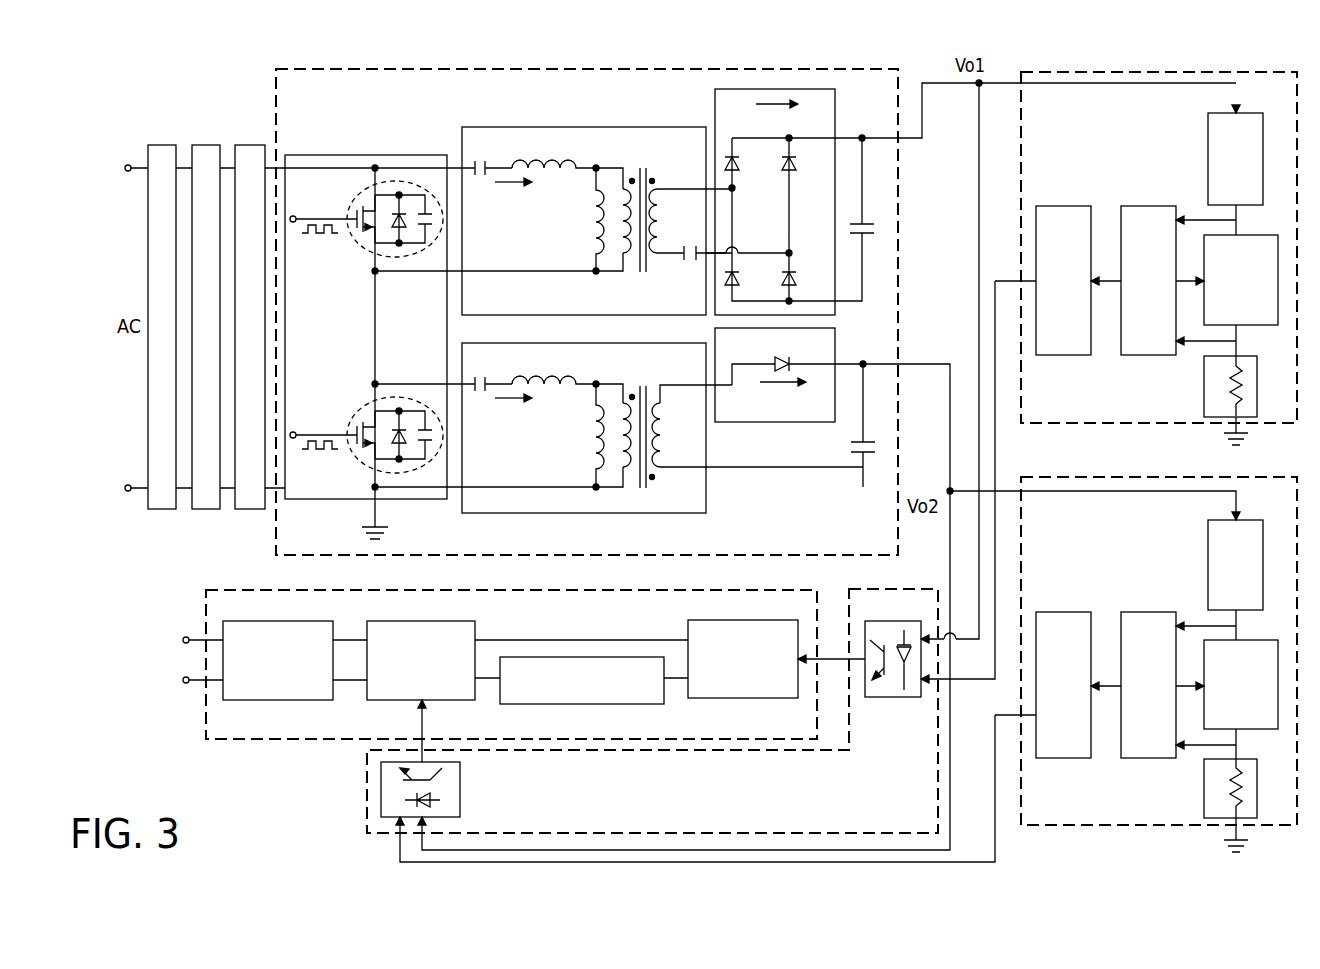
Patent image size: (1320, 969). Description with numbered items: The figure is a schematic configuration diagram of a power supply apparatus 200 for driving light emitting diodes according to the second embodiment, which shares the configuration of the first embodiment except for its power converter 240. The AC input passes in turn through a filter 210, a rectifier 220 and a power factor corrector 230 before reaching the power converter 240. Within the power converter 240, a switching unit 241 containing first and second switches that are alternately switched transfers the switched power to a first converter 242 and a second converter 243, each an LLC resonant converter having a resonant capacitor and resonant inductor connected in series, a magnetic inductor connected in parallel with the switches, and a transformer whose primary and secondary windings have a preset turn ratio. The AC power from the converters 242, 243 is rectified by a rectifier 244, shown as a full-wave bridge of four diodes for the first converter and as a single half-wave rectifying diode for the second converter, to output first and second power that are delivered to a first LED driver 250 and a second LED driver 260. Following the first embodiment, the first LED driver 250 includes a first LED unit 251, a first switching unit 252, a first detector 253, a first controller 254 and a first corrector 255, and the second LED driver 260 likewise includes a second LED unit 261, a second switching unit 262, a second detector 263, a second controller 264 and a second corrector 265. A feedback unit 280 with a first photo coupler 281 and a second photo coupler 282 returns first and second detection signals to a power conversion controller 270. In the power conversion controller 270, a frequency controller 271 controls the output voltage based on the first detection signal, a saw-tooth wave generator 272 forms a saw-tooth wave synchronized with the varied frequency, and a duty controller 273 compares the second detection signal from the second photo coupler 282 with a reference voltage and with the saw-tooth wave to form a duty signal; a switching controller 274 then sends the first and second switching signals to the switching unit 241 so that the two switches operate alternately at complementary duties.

The power supply apparatus for driving light emitting diodes 200 is at (675, 52).
The filter 210 is at (163, 145).
The rectifier 220 is at (207, 145).
The power factor corrector 230 is at (252, 145).
The power converter 240 is at (850, 69).
The switching unit 241 is at (370, 155).
The first converter 242 is at (655, 127).
The second converter 243 is at (655, 347).
The first rectifier 244 is at (835, 123).
The first LED driver 250 is at (1245, 72).
The first LED unit 251 is at (1243, 119).
The first switching unit 252 is at (1241, 235).
The first detector 253 is at (1238, 356).
The first controller 254 is at (1136, 206).
The first corrector 255 is at (1051, 206).
The second LED driver 260 is at (1245, 477).
The second LED unit 261 is at (1243, 518).
The second switching unit 262 is at (1241, 640).
The second detector 263 is at (1238, 759).
The second controller 264 is at (1136, 612).
The second corrector 265 is at (1051, 612).
The power conversion controller 270 is at (768, 590).
The frequency controller 271 is at (758, 620).
The saw-tooth wave generator 272 is at (636, 704).
The duty controller 273 is at (431, 621).
The switching controller 274 is at (291, 621).
The feedback unit 280 is at (890, 589).
The first photo coupler 281 is at (878, 621).
The second photo coupler 282 is at (460, 790).